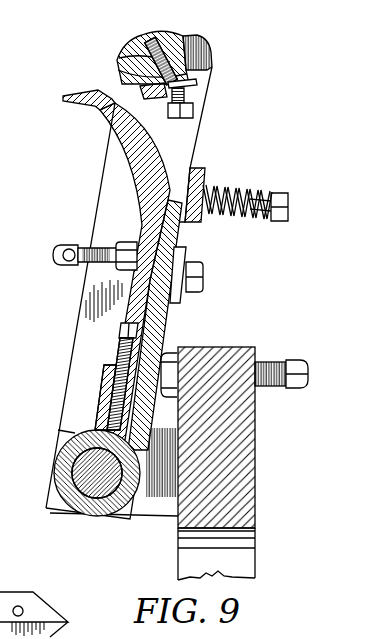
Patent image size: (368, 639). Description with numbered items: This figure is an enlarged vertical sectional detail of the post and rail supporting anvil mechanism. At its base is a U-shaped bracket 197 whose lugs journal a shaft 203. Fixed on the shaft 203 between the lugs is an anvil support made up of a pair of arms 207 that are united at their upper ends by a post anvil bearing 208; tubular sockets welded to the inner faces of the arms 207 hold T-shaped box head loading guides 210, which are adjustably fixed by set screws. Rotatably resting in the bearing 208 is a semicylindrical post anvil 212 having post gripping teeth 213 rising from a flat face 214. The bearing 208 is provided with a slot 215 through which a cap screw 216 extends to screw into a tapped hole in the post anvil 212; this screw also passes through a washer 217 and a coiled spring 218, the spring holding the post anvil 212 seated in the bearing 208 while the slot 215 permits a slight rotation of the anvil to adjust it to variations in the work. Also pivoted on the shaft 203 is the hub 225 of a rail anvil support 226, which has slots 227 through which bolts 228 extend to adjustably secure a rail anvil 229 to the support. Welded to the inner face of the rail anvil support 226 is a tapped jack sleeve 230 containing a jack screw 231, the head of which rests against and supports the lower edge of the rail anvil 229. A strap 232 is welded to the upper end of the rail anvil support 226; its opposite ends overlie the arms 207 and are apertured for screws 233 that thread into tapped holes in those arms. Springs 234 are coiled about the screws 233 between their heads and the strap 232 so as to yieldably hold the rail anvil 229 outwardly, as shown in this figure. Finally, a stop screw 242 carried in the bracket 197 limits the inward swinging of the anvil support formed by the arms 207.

The U-shaped bracket 197 is at (242, 460).
The shaft 203 is at (68, 468).
The arms 207 is at (189, 142).
The post anvil bearing 208 is at (203, 42).
The T-shaped box head loading guide 210 is at (62, 250).
The post anvil 212 is at (165, 34).
The post gripping teeth 213 is at (123, 60).
The flat face 214 is at (153, 53).
The slot 215 is at (176, 83).
The cap screw 216 is at (195, 110).
The washer 217 is at (155, 97).
The coiled spring 218 is at (186, 96).
The hub 225 is at (100, 513).
The rail anvil support 226 is at (164, 322).
The slots 227 is at (188, 252).
The bolts 228 is at (203, 276).
The rail anvil 229 is at (144, 203).
The jack sleeve 230 is at (105, 405).
The jack screw 231 is at (118, 350).
The strap 232 is at (205, 175).
The screws 233 is at (285, 196).
The springs 234 is at (259, 211).
The stop screws 242 is at (272, 362).